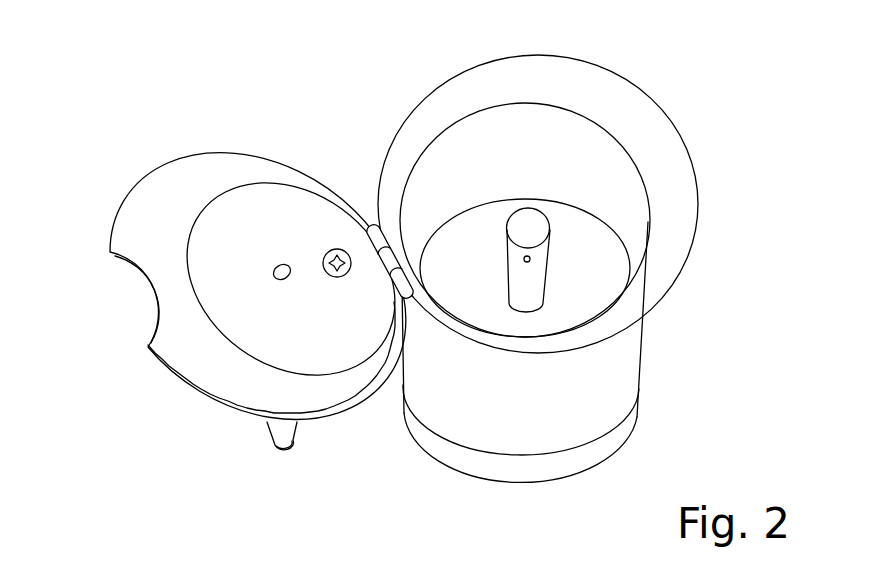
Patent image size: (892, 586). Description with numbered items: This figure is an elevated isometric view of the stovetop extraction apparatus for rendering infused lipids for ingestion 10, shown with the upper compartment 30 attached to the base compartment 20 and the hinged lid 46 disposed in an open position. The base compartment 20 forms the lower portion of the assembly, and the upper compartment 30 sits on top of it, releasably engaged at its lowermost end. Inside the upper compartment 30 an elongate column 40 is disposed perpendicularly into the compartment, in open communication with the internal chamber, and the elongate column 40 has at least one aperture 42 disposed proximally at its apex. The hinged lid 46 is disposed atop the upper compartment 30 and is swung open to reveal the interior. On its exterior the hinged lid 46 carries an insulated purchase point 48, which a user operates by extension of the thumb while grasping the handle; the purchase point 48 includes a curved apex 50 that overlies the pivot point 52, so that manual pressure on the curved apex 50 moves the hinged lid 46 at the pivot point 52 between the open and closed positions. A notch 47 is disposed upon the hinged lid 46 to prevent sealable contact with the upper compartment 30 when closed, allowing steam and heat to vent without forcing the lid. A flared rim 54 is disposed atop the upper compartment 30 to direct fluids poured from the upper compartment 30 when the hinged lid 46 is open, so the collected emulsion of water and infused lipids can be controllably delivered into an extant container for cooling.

The stovetop extraction apparatus for rendering infused lipids for ingestion 10 is at (732, 115).
The base compartment 20 is at (618, 428).
The upper compartment 30 is at (630, 352).
The elongate column 40 is at (528, 291).
The aperture 42 is at (530, 257).
The hinged lid 46 is at (257, 167).
The notch 47 is at (128, 302).
The insulated purchase point 48 is at (280, 430).
The curved apex 50 is at (279, 450).
The pivot point 52 is at (372, 230).
The flared rim 54 is at (593, 83).